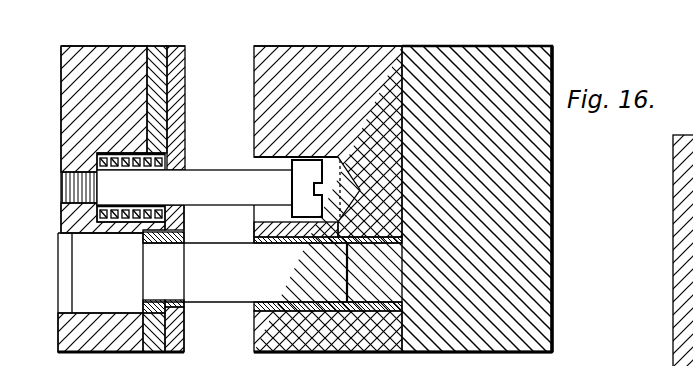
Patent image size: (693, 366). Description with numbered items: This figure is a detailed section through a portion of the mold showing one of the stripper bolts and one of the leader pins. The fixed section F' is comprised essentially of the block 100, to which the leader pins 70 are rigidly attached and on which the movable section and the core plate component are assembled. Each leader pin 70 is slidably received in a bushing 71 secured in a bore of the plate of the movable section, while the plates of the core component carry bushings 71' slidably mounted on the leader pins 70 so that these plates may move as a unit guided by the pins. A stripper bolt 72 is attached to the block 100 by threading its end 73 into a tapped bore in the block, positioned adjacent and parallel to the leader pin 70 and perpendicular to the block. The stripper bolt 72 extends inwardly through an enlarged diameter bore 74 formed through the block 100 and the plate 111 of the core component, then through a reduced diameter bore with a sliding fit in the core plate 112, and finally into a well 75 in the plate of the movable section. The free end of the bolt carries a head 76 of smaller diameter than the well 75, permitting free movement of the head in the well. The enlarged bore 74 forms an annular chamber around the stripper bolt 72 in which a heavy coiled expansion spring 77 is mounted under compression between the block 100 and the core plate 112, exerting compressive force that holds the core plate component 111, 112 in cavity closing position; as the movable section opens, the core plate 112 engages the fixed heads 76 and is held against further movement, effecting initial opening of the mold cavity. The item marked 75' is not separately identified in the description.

The block 100 is at (62, 165).
The fixed section F' is at (42, 139).
The threaded end 73 is at (62, 192).
The plate 111 is at (157, 54).
The core plate 112 is at (176, 56).
The enlarged diameter bore 74 is at (132, 155).
The coiled expansion spring 77 is at (150, 157).
The well 75 is at (154, 218).
The packing ring 75' is at (312, 144).
The stripper bolt 72 is at (188, 183).
The head 76 is at (303, 205).
The bushing 71' is at (121, 292).
The leader pin 70 is at (240, 283).
The bushing 71 is at (309, 327).